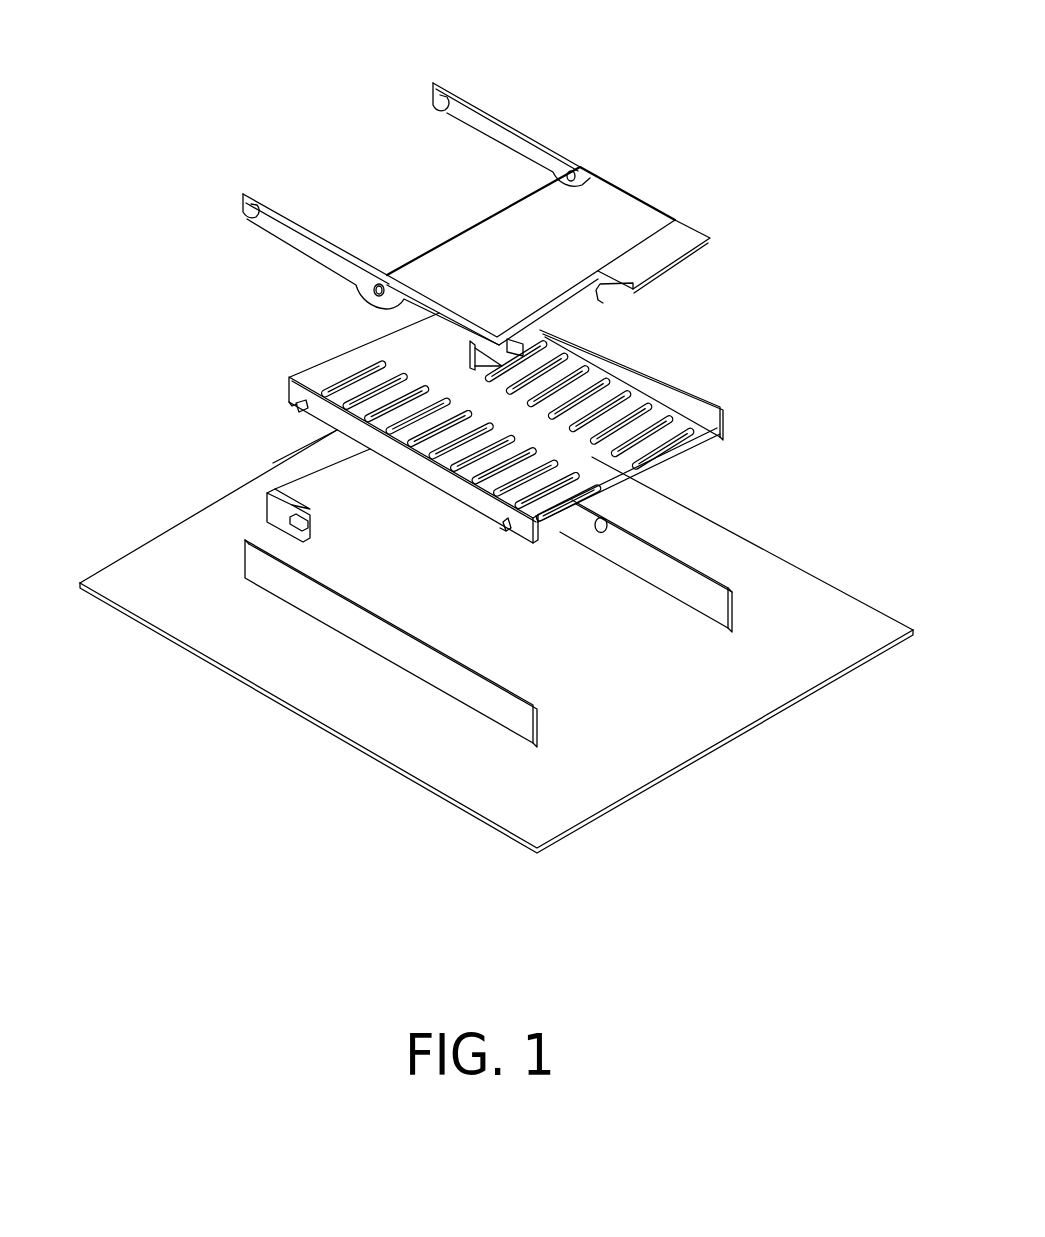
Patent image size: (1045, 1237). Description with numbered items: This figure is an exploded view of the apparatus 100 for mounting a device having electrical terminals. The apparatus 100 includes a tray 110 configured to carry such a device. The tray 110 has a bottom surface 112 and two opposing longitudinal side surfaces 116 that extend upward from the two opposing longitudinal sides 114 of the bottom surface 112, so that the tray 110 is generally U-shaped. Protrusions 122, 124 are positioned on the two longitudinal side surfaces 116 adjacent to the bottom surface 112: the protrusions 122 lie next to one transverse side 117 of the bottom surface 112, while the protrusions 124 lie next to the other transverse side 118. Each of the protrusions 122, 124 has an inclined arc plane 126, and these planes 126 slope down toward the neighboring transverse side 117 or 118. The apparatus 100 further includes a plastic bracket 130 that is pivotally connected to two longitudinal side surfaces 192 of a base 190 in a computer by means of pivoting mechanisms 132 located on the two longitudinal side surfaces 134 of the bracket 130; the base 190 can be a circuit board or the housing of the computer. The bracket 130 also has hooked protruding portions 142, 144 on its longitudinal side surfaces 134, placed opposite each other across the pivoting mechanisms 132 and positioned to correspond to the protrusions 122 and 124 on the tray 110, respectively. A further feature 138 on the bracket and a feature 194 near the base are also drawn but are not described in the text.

The apparatus for mounting a device having electrical terminals 100 is at (228, 133).
The tray 110 is at (510, 462).
The bottom surface 112 is at (525, 419).
The longitudinal sides 114 is at (273, 463).
The longitudinal side surfaces 116 is at (433, 476).
The transverse side 117 is at (688, 458).
The transverse side 118 is at (345, 370).
The protrusions 122 is at (500, 528).
The protrusions 124 is at (298, 406).
The inclined arc plane 126 is at (298, 404).
The plastic bracket 130 is at (465, 181).
The pivoting mechanisms 132 is at (571, 176).
The longitudinal side surfaces 134 is at (507, 126).
The lip flange 138 is at (652, 266).
The hooked protruding portions 142 is at (468, 356).
The hooked protruding portions 144 is at (436, 103).
The base 190 is at (780, 728).
The longitudinal side surfaces 192 is at (477, 692).
The standoff 194 is at (262, 513).